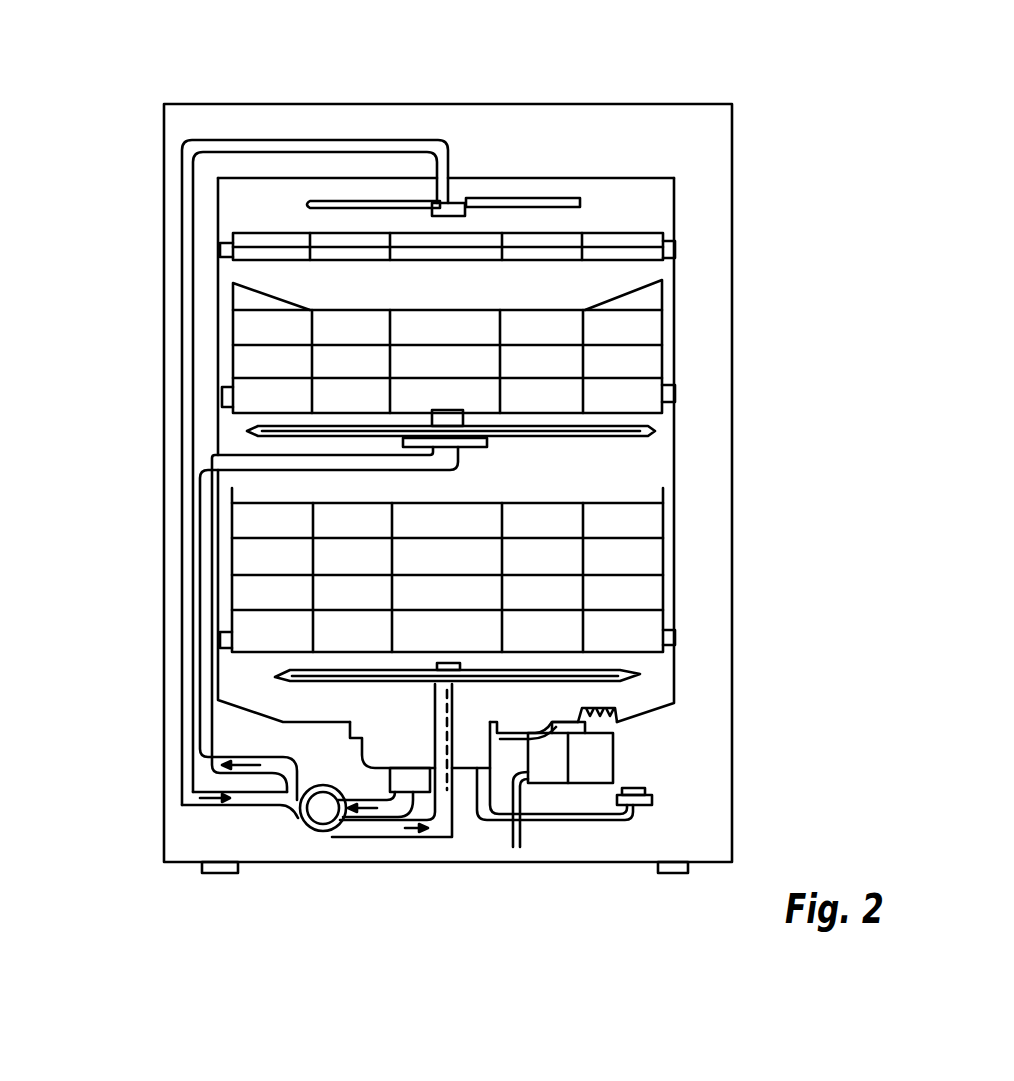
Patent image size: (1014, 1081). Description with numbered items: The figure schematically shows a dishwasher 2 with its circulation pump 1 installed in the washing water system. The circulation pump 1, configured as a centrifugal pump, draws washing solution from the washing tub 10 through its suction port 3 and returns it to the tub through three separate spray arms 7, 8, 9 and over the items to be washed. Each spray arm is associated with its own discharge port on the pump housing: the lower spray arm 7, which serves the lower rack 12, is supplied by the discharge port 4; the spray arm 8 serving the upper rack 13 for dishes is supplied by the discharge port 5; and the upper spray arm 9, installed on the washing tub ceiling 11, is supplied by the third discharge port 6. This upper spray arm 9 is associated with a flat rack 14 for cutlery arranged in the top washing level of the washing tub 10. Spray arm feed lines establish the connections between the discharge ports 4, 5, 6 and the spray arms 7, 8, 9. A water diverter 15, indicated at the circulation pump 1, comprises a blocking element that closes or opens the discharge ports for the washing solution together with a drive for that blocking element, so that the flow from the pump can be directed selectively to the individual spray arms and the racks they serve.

The circulation pump 1 is at (422, 525).
The dishwasher 2 is at (660, 166).
The suction port 3 is at (388, 818).
The discharge port 4 is at (334, 888).
The discharge port 5 is at (290, 786).
The discharge port 6 is at (182, 392).
The spray arm 7 is at (520, 672).
The spray arm 8 is at (317, 436).
The upper spray arm 9 is at (432, 197).
The washing tub 10 is at (657, 470).
The washing tub ceiling 11 is at (551, 178).
The lower rack 12 is at (663, 608).
The upper rack 13 is at (663, 352).
The flat rack 14 is at (675, 233).
The water diverter 15 is at (312, 805).